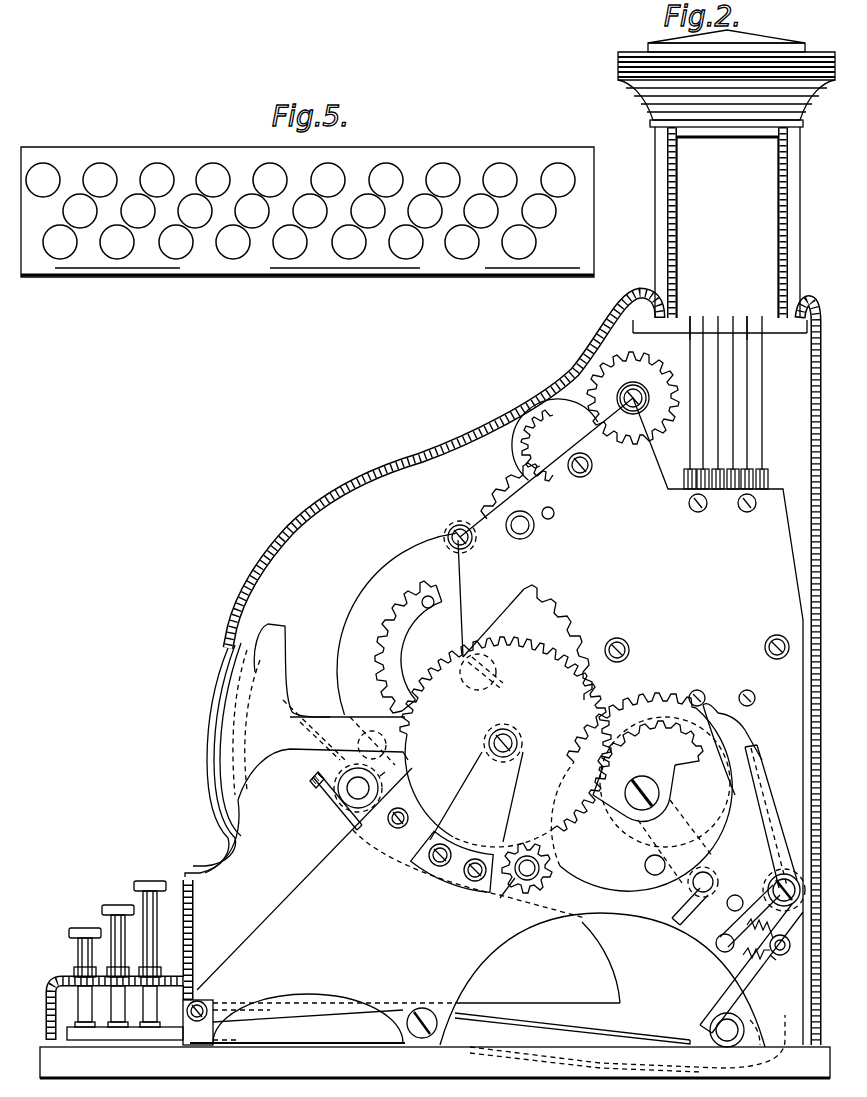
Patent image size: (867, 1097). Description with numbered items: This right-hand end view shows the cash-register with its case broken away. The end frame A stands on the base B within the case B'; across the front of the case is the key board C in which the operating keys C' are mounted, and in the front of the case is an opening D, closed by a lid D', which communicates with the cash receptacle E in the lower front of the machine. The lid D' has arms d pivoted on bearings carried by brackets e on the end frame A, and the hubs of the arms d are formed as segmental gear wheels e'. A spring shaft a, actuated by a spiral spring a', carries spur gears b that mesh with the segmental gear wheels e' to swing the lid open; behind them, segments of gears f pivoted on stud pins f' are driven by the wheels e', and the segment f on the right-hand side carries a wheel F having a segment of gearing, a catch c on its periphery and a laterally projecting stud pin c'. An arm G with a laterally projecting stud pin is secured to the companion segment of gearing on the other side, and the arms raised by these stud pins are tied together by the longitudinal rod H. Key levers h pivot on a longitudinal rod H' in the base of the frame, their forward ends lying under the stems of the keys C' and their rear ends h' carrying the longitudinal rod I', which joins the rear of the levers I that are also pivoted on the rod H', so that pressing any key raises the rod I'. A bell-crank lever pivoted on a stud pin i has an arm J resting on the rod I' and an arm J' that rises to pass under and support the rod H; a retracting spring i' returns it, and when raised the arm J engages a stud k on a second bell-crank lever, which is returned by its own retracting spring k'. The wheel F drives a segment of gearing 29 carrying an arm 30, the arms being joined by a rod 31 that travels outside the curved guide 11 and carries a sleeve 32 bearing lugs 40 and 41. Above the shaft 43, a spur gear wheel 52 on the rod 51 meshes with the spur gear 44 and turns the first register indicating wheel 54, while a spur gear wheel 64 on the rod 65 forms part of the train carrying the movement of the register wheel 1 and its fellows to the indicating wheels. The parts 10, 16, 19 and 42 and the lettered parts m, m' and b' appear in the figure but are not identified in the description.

In FIG. 5, the key board C is at (307, 233).
In FIG. 2, the key board C is at (122, 962).
In FIG. 5, the operating keys C' is at (300, 241).
In FIG. 2, the operating keys C' is at (117, 940).
In FIG. 2, the base B is at (435, 1062).
In FIG. 2, the case B' is at (522, 669).
In FIG. 2, the indicator tablets m is at (739, 402).
In FIG. 2, the indicator rods m' is at (720, 312).
In FIG. 2, the end frame A is at (500, 721).
In FIG. 2, the stud 10 is at (452, 530).
In FIG. 2, the shaft 43 is at (534, 527).
In FIG. 2, the spur gear 44 is at (492, 500).
In FIG. 2, the first register indicating wheel 54 is at (555, 439).
In FIG. 2, the spur gear wheel 52 is at (546, 445).
In FIG. 2, the rod 51 is at (592, 465).
In FIG. 2, the spur gear wheel 64 is at (633, 398).
In FIG. 2, the rod 65 is at (633, 411).
In FIG. 2, the curved guide 11 is at (396, 624).
In FIG. 2, the register wheel 1 is at (408, 647).
In FIG. 2, the pin 16 is at (422, 600).
In FIG. 2, the arm 30 is at (405, 712).
In FIG. 2, the segment of gearing 29 is at (527, 642).
In FIG. 2, the segmental gear wheel e' is at (505, 742).
In FIG. 2, the spiral spring a' is at (486, 743).
In FIG. 2, the bracket e is at (467, 822).
In FIG. 2, the spring shaft a is at (536, 869).
In FIG. 2, the spur gear b is at (498, 897).
In FIG. 2, the wheel F is at (658, 706).
In FIG. 2, the segmental gear f is at (648, 771).
In FIG. 2, the stud pin f' is at (630, 806).
In FIG. 2, the stud pin c' is at (638, 864).
In FIG. 2, the catch c is at (728, 749).
In FIG. 2, the bell-crank lever arm J' is at (771, 806).
In FIG. 2, the opening D is at (199, 762).
In FIG. 2, the lid D' is at (206, 754).
In FIG. 2, the arm d is at (324, 694).
In FIG. 2, the cash receptacle E is at (485, 898).
In FIG. 2, the lug 40 is at (388, 772).
In FIG. 2, the rod 31 is at (350, 796).
In FIG. 2, the sleeve 32 is at (345, 780).
In FIG. 2, the lug 41 is at (338, 806).
In FIG. 2, the stop 42 is at (310, 784).
In FIG. 2, the stud 19 is at (395, 828).
In FIG. 2, the key lever h is at (434, 1018).
In FIG. 2, the longitudinal rod H' is at (422, 998).
In FIG. 2, the lever I is at (451, 1028).
In FIG. 2, the arm G is at (683, 896).
In FIG. 2, the pin b' is at (724, 907).
In FIG. 2, the longitudinal rod H is at (729, 910).
In FIG. 2, the stud k is at (744, 940).
In FIG. 2, the retracting spring k' is at (772, 895).
In FIG. 2, the stud pin i is at (777, 887).
In FIG. 2, the retracting spring i' is at (779, 963).
In FIG. 2, the bell-crank lever arm J is at (751, 968).
In FIG. 2, the longitudinal rod I' is at (744, 1018).
In FIG. 2, the rear end of key lever h' is at (772, 1025).